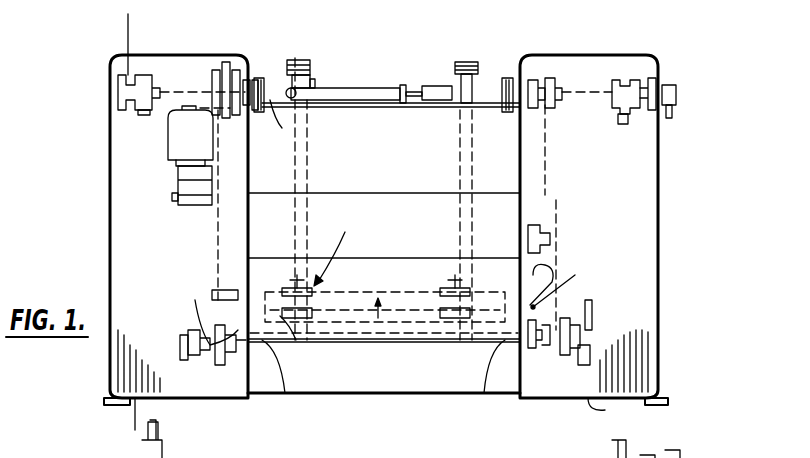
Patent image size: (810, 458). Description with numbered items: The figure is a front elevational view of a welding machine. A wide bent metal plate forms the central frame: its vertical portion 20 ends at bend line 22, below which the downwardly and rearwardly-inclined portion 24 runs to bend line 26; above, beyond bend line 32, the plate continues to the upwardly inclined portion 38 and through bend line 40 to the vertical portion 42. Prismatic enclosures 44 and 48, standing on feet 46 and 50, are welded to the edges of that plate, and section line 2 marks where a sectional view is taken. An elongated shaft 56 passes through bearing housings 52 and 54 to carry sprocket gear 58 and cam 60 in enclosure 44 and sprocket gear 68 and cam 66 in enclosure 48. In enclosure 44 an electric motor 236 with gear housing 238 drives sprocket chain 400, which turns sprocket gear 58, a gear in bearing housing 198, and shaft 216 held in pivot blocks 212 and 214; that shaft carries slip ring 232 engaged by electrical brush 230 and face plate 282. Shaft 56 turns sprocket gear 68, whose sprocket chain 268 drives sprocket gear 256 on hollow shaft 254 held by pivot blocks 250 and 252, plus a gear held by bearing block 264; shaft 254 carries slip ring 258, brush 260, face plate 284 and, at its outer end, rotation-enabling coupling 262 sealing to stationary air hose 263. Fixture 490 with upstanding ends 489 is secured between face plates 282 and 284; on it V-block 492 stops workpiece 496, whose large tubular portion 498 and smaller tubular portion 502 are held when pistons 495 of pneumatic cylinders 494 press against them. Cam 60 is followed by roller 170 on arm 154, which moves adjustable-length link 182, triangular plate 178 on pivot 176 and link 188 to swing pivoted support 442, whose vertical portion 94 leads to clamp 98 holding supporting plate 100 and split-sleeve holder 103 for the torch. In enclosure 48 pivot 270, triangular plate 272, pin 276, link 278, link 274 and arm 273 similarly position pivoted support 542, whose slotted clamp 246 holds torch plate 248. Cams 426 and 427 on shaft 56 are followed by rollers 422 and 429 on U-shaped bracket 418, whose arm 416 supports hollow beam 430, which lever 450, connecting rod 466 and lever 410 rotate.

The section line 2- 2 is at (114, 28).
The vertically-directed portion 20 is at (388, 262).
The bend line 22 is at (426, 345).
The downwardly and rearwardly-inclined portion 24 is at (352, 345).
The bend line 26 is at (316, 396).
The bend line 32 is at (364, 258).
The upwardly and rearwardly-inclined portion 38 is at (324, 204).
The bend line 40 is at (420, 193).
The vertically-directed portion 42 is at (396, 162).
The prismatic enclosure 44 is at (108, 268).
The feet 46 is at (108, 398).
The prismatic enclosure 48 is at (660, 262).
The feet 50 is at (666, 398).
The bearing housing 52 is at (244, 398).
The bearing housing 54 is at (518, 398).
The elongated shaft 56 is at (368, 396).
The sprocket gear 58 is at (212, 398).
The cam 60 is at (188, 332).
The cam 66 is at (575, 330).
The sprocket gear 68 is at (566, 398).
The vertically-directed portion 94 is at (308, 178).
The clamp 98 is at (300, 60).
The supporting plate 100 is at (308, 76).
The split-sleeve holder 103 is at (316, 86).
The elongated horizontally-directed arm 154 is at (190, 380).
The roller 170 is at (190, 340).
The pivot 176 is at (308, 318).
The generally-triangular plate 178 is at (195, 292).
The adjustable-length link 182 is at (190, 320).
The adjustable-length link 188 is at (262, 275).
The bearing housing 198 is at (250, 236).
The pivot block 212 is at (118, 108).
The pivot block 214 is at (240, 70).
The shaft 216 is at (180, 88).
The electrical brush 230 is at (142, 116).
The slip ring 232 is at (142, 75).
The electric motor 236 is at (162, 160).
The gear housing 238 is at (170, 205).
The slotted clamp 246 is at (468, 74).
The plate 248 is at (462, 62).
The pivot block 250 is at (532, 80).
The pivot block 252 is at (660, 72).
The hollow rotatable shaft 254 is at (583, 85).
The sprocket gear 256 is at (555, 78).
The slip ring 258 is at (625, 80).
The electrical brush 260 is at (620, 124).
The rotation-enabling coupling 262 is at (678, 90).
The air hose 263 is at (674, 112).
The bearing block 264 is at (548, 225).
The sprocket chain 268 is at (548, 162).
The pivot 270 is at (540, 290).
The generally-triangular plate 272 is at (572, 300).
The elongated horizontally-directed arm 273 is at (613, 411).
The adjustable-length link 274 is at (592, 345).
The pin 276 is at (556, 268).
The adjustable-length link 278 is at (486, 262).
The face plate 282 is at (252, 80).
The face plate 284 is at (516, 80).
The sprocket chain 400 is at (200, 200).
The lever 410 is at (178, 128).
The left-hand arm 416 is at (648, 448).
The U-shaped bracket 418 is at (396, 345).
The roller 422 is at (283, 345).
The cam 426 is at (272, 393).
The cam 427 is at (502, 393).
The roller 429 is at (492, 395).
The elongated hollow beam 430 is at (390, 282).
The elongated, angular, pivoted support 442 is at (339, 250).
The lever 450 is at (205, 215).
The connecting rod 466 is at (176, 170).
The upstanding ends 489 is at (260, 112).
The fixture 490 is at (395, 108).
The V-block 492 is at (285, 128).
The pneumatic cylinders 494 is at (436, 86).
The pistons 495 is at (414, 88).
The workpiece 496 is at (358, 88).
The tubular portion 498 is at (296, 98).
The tubular portion 502 is at (398, 88).
The elongated, angular, pivoted support 542 is at (480, 288).